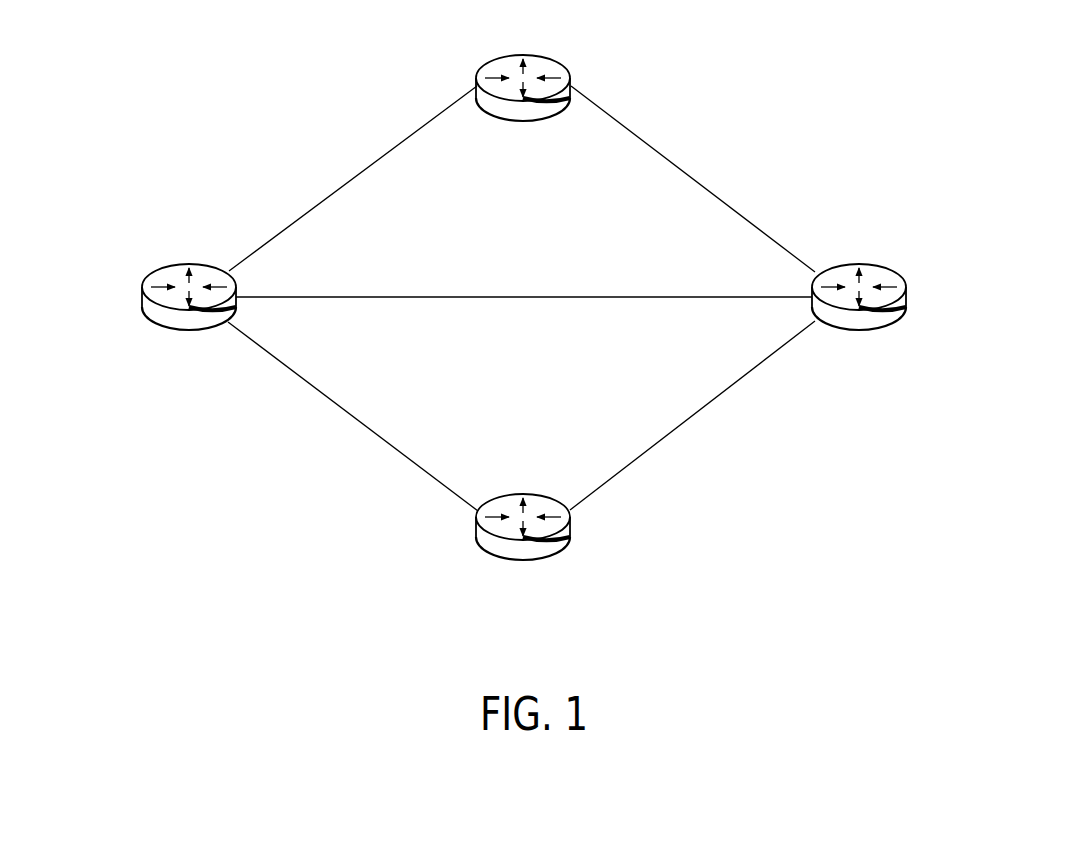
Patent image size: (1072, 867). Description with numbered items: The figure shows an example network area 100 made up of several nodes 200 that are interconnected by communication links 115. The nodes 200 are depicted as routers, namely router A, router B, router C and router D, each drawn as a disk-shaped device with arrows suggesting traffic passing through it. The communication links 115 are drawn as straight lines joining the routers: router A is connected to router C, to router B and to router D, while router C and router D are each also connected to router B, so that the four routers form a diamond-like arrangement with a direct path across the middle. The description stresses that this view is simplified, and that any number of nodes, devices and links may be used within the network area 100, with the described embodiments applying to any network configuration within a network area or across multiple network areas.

The network area 100 is at (264, 79).
The communication links 115 is at (684, 165).
The node 200 is at (940, 299).
The router A is at (165, 268).
The router B is at (885, 329).
The router C is at (505, 57).
The router D is at (555, 560).